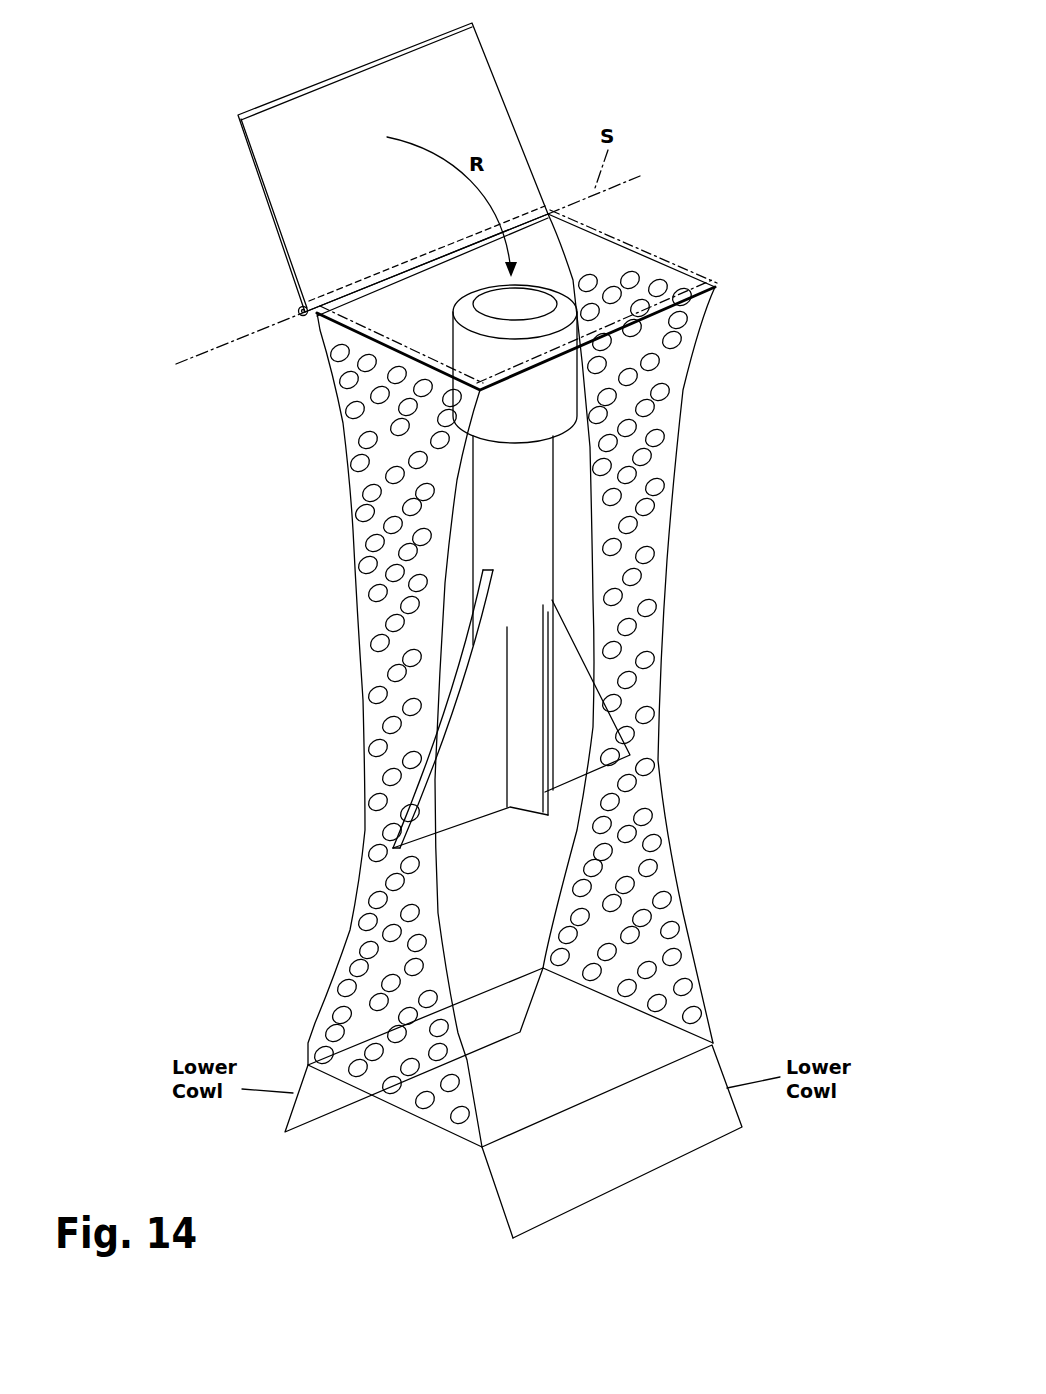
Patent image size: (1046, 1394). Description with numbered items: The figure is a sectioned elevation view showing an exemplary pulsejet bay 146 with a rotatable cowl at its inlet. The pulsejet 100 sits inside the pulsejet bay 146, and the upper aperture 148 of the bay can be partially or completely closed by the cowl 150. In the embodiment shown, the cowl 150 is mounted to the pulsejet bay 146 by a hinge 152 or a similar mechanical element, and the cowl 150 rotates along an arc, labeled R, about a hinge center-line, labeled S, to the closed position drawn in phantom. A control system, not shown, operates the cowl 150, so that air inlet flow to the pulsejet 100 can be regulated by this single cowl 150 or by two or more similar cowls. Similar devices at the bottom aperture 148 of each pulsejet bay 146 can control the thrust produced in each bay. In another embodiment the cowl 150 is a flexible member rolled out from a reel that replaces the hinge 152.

The pulsejet 100 is at (522, 515).
The pulsejet bay 146 is at (318, 597).
The upper aperture 148 is at (648, 267).
The cowl 150 is at (277, 231).
The hinge 152 is at (298, 313).